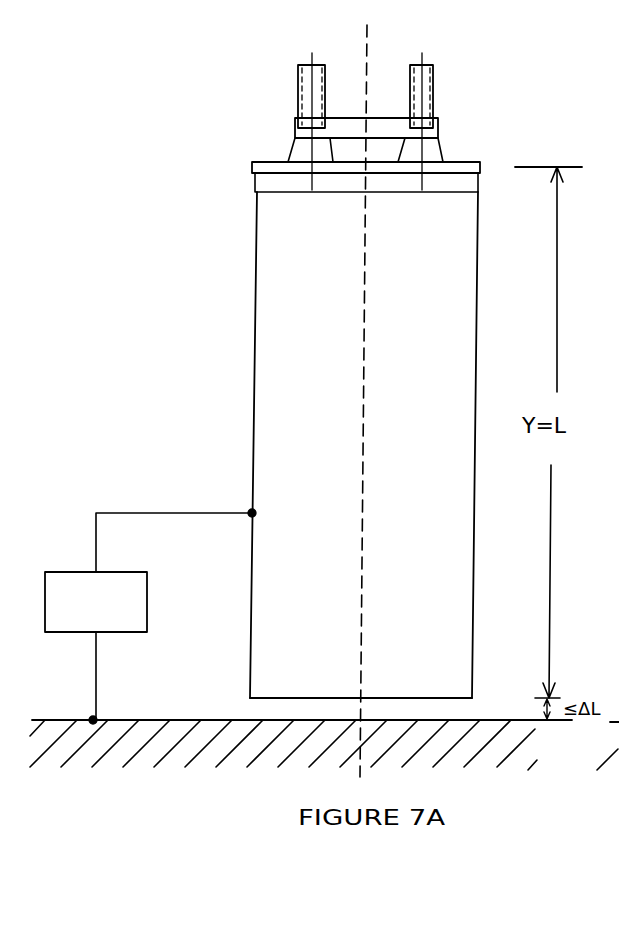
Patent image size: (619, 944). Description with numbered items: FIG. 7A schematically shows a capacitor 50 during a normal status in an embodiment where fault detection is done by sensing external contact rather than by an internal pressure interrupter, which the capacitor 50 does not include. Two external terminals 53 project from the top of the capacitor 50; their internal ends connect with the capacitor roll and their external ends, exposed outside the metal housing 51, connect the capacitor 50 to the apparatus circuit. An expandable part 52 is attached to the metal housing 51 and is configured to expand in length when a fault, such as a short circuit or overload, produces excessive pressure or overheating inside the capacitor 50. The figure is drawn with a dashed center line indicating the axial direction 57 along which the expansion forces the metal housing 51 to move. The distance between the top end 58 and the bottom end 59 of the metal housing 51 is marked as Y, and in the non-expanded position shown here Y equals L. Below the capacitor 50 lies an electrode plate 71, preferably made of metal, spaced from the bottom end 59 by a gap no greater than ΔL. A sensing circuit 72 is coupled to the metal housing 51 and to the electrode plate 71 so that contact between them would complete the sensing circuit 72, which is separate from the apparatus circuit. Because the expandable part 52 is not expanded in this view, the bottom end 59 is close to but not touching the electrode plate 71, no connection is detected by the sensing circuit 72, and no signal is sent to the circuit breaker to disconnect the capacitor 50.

The capacitor 50 is at (524, 127).
The metal housing 51 is at (476, 348).
The expandable part 52 is at (255, 192).
The external terminals 53 is at (299, 87).
The axial direction 57 is at (372, 53).
The top end 58 is at (467, 163).
The bottom end 59 is at (250, 700).
The electrode plate 71 is at (503, 760).
The sensing circuit 72 is at (147, 610).